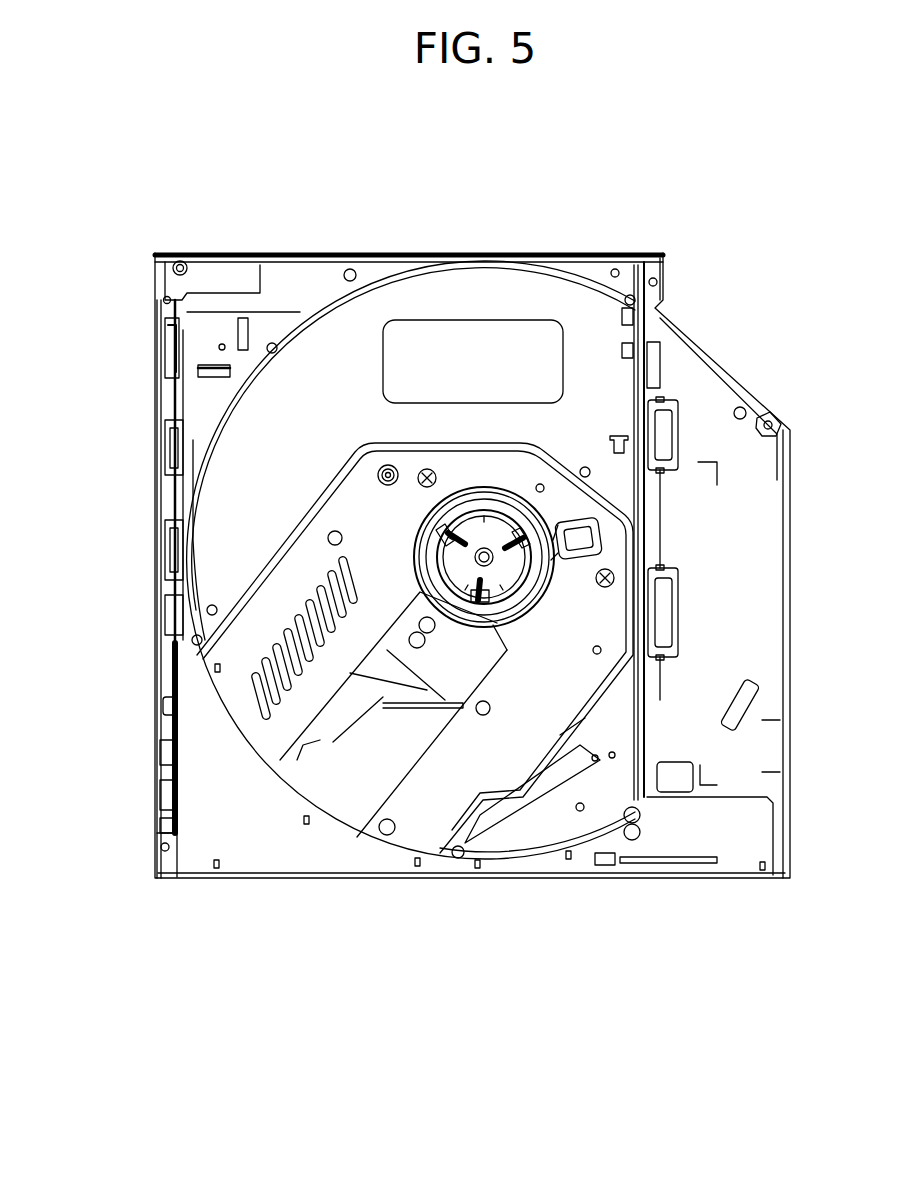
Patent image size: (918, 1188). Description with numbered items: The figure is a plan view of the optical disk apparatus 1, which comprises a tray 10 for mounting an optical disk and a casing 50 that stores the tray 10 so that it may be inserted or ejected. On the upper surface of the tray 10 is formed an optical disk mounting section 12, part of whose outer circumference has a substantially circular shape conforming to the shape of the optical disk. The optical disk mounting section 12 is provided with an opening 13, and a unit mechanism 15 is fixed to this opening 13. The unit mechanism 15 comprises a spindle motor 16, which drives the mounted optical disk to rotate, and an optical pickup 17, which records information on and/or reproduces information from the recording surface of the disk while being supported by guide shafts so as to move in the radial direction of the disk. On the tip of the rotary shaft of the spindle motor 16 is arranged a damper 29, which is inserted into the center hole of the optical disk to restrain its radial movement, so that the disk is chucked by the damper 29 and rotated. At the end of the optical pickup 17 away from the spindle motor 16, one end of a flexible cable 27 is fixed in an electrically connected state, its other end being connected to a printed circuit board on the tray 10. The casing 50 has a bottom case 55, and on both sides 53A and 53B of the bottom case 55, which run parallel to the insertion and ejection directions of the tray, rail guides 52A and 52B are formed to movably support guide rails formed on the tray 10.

The optical disk apparatus 1 is at (697, 183).
The tray 10 is at (418, 878).
The optical disk mounting section 12 is at (470, 306).
The opening 13 is at (590, 673).
The unit mechanism 15 is at (502, 768).
The spindle motor 16 is at (536, 604).
The optical pickup 17 is at (447, 662).
The flexible cable 27 is at (303, 745).
The damper 29 is at (517, 563).
The casing 50 is at (599, 249).
The rail guide 52A is at (652, 366).
The rail guide 52B is at (168, 390).
The side of bottom case 53A is at (660, 521).
The side of bottom case 53B is at (160, 540).
The bottom case 55 is at (155, 403).